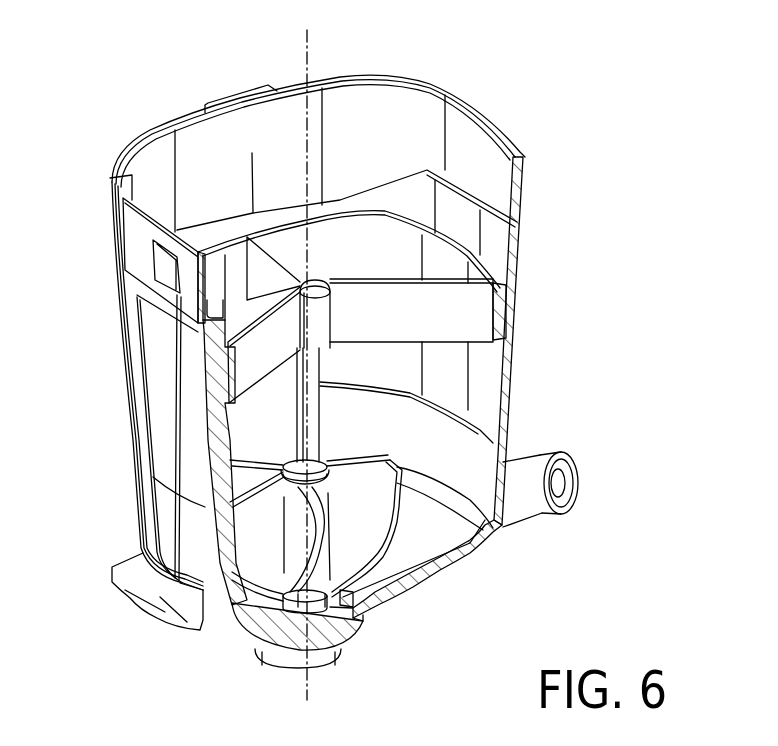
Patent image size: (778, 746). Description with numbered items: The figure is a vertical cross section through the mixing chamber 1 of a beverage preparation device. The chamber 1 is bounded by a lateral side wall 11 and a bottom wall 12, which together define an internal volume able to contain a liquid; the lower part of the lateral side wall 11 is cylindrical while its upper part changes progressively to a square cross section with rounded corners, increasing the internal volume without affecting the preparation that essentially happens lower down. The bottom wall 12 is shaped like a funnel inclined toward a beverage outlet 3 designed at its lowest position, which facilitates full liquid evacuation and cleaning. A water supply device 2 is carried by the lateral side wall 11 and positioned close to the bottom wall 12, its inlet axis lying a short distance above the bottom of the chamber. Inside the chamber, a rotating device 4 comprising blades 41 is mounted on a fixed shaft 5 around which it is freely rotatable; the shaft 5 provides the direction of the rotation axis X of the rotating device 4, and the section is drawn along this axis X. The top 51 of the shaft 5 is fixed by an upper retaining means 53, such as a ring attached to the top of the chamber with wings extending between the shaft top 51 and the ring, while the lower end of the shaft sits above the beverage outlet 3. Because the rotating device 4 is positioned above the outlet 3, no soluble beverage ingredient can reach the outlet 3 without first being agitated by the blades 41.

The chamber 1 is at (582, 57).
The water supply device 2 is at (518, 458).
The beverage outlet 3 is at (315, 665).
The rotating device 4 is at (403, 553).
The fixed shaft 5 is at (322, 442).
The lateral side wall 11 is at (518, 260).
The bottom wall 12 is at (473, 548).
The blades 41 is at (363, 543).
The top of the shaft 51 is at (330, 350).
The upper retaining means 53 is at (363, 237).
The rotation axis XX' X is at (305, 50).